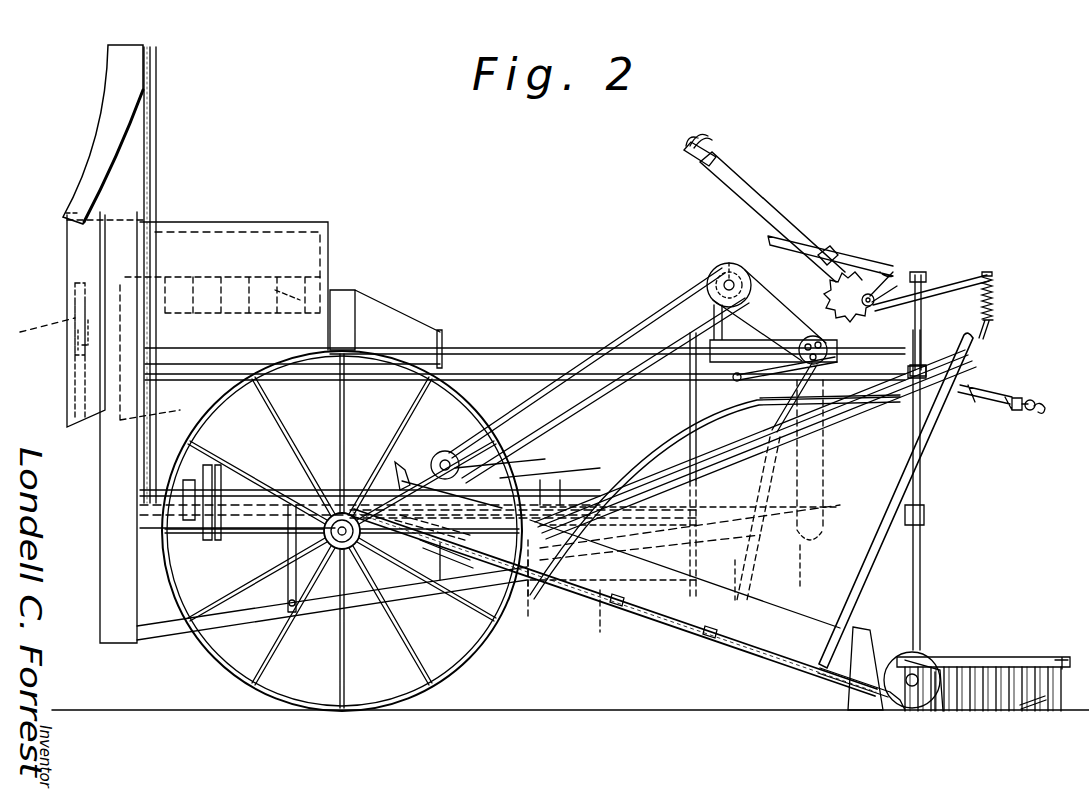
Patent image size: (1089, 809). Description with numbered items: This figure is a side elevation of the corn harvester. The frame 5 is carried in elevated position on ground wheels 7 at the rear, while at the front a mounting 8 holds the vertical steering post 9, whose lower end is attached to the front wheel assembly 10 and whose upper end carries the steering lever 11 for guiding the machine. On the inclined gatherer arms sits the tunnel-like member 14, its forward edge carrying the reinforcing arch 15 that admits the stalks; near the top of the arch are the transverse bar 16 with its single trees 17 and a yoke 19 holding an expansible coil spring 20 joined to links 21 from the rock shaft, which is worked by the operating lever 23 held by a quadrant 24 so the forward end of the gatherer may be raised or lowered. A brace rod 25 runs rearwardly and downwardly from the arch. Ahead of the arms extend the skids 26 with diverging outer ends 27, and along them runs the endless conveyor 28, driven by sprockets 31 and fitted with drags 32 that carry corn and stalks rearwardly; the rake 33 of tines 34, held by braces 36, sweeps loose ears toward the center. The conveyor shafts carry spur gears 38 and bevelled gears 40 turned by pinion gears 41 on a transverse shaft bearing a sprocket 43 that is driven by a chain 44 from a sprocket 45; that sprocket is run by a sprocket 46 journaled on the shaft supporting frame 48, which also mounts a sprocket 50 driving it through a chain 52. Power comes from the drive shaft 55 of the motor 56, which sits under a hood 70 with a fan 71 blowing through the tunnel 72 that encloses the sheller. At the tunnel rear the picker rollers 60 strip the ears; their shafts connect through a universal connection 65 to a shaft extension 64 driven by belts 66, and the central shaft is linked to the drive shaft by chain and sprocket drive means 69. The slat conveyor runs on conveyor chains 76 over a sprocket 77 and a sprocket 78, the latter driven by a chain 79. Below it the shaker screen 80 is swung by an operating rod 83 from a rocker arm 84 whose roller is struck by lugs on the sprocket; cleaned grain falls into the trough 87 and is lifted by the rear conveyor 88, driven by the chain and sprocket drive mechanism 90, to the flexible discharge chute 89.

The frame 5 is at (497, 372).
The ground wheels 7 is at (457, 670).
The mounting 8 is at (908, 366).
The vertical steering post 9 is at (921, 560).
The front wheel assembly 10 is at (928, 660).
The steering lever 11 is at (847, 262).
The tunnel-like member 14 is at (716, 452).
The reinforcing arch 15 is at (918, 481).
The transverse bar 16 is at (972, 401).
The single trees 17 is at (1036, 402).
The yoke 19 is at (990, 341).
The expansible coil spring 20 is at (993, 296).
The links 21 is at (946, 288).
The operating lever 23 is at (760, 197).
The quadrant 24 is at (840, 293).
The brace rod 25 is at (655, 453).
The skids 26 is at (920, 712).
The diverging outer ends 27 is at (1040, 712).
The endless conveyor 28 is at (680, 630).
The sprockets 31 is at (440, 545).
The drags 32 is at (712, 641).
The rake 33 is at (985, 657).
The tines 34 is at (984, 712).
The braces 36 is at (943, 713).
The spur gears 38 is at (560, 478).
The bevelled gears 40 is at (434, 452).
The pinion gears 41 is at (498, 470).
The sprocket 43 is at (505, 435).
The chain 44 is at (598, 388).
The sprocket 45 is at (725, 262).
The sprocket 46 is at (707, 280).
The shaft supporting frame 48 is at (773, 333).
The sprocket 50 is at (800, 340).
The chain 52 is at (805, 323).
The drive shaft 55 is at (560, 348).
The motor 56 is at (313, 280).
The picker rollers 60 is at (431, 540).
The shaft extension 64 is at (270, 452).
The universal connection 65 is at (398, 475).
The belts 66 is at (220, 545).
The chain and sprocket drive means 69 is at (700, 416).
The hood 70 is at (208, 230).
The fan 71 is at (37, 330).
The tunnel 72 is at (172, 420).
The conveyor chains 76 is at (748, 585).
The sprocket 77 is at (528, 602).
The sprocket 78 is at (805, 547).
The chain 79 is at (826, 477).
The shaker screen 80 is at (600, 630).
The operating rod 83 is at (748, 470).
The rocker arm 84 is at (777, 368).
The trough 87 is at (185, 642).
The conveyor 88 is at (108, 573).
The flexible discharge chute 89 is at (97, 150).
The chain and sprocket drive mechanism 90 is at (157, 167).